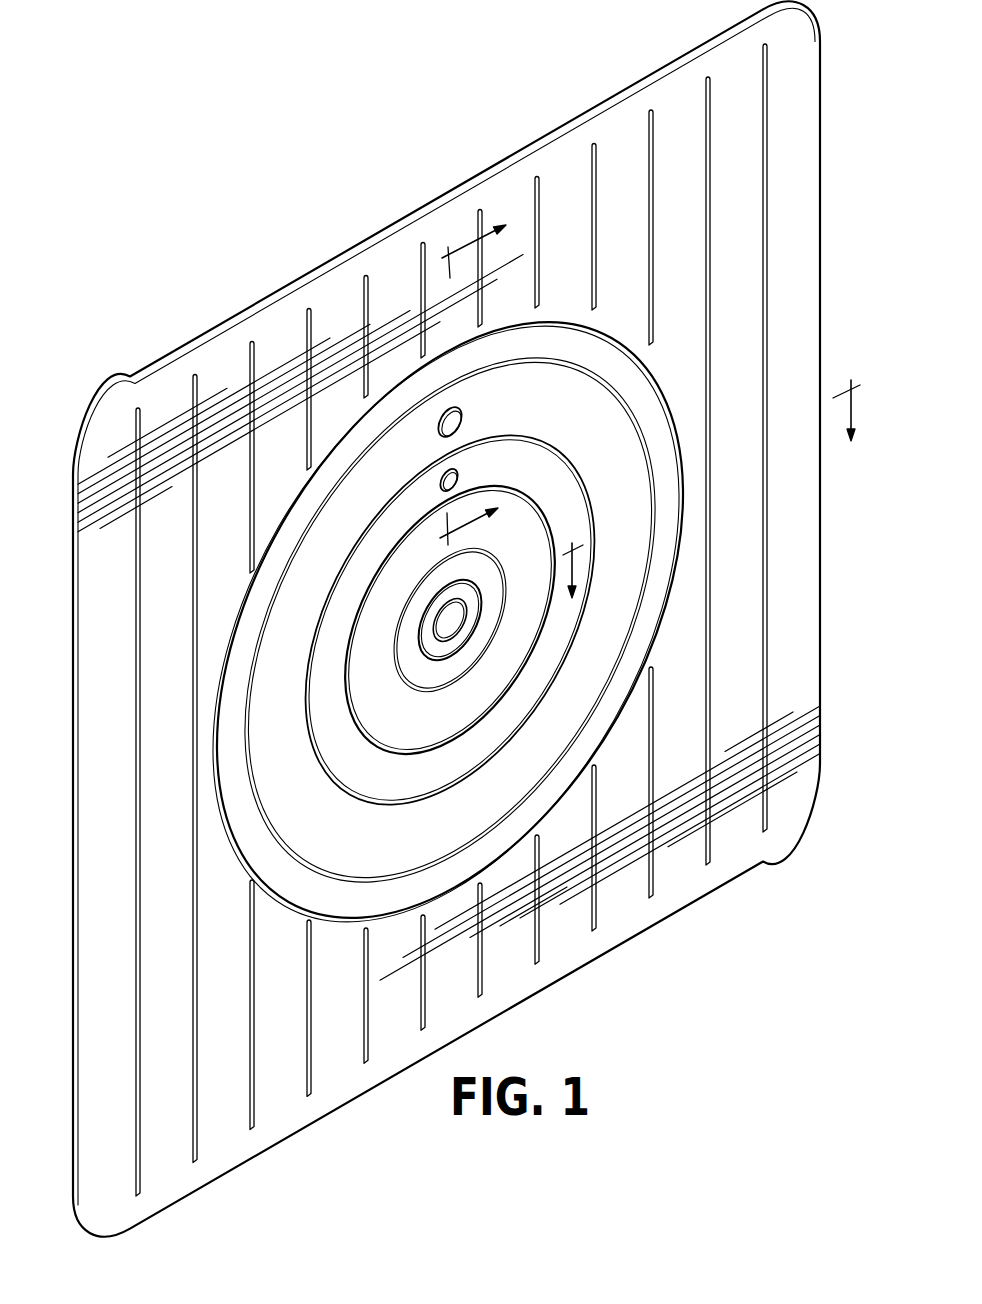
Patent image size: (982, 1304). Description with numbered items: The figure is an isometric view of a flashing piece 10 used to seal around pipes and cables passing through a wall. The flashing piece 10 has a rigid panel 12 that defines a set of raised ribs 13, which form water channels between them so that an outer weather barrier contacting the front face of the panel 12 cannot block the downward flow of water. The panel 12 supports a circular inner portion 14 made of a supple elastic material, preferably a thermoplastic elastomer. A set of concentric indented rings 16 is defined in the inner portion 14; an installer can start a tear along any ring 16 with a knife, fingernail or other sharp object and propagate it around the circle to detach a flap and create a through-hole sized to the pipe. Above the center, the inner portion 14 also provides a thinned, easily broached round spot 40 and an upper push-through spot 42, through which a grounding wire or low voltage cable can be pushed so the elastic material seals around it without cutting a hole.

The flashing piece 10 is at (436, 618).
The rigid panel 12 is at (72, 831).
The raised ribs 13 is at (539, 222).
The circular inner portion 14 is at (289, 520).
The indented rings 16 is at (528, 486).
The thinned round spot 40 is at (440, 482).
The upper push-through spot 42 is at (464, 419).